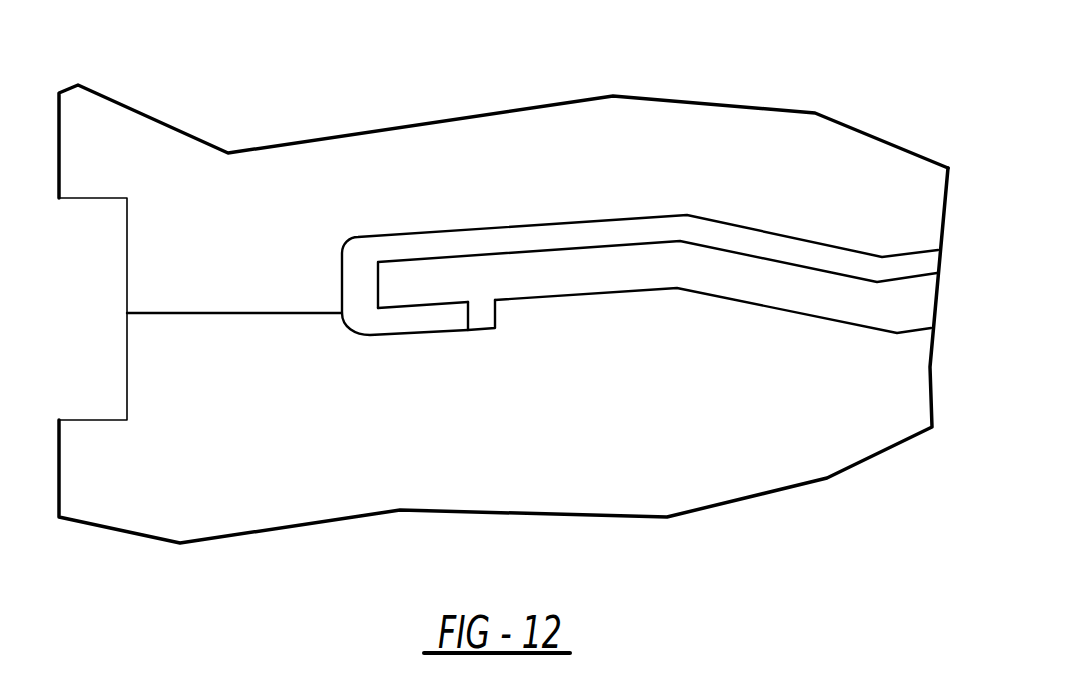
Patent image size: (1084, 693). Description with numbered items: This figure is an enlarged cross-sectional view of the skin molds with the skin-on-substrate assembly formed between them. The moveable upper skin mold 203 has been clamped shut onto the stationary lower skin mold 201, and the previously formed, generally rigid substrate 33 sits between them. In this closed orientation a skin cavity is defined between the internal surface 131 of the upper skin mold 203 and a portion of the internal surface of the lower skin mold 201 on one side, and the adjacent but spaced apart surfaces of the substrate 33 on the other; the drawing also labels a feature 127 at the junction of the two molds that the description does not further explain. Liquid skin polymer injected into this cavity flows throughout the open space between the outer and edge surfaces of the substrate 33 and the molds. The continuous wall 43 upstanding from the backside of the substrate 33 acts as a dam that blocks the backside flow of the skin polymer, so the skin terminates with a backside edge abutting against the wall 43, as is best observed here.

The upper skin mold 203 is at (183, 188).
The lower skin mold 201 is at (677, 488).
The interface / parting line 127 is at (210, 312).
The internal surface of upper skin mold 131 is at (362, 257).
The substrate 33 is at (630, 273).
The wall 43 is at (483, 313).